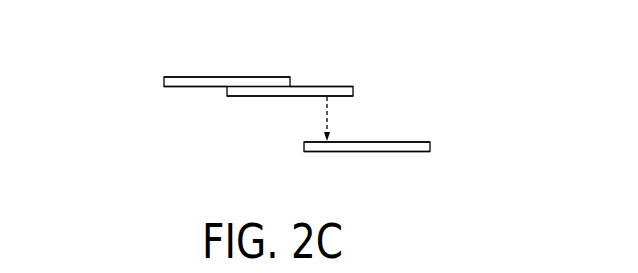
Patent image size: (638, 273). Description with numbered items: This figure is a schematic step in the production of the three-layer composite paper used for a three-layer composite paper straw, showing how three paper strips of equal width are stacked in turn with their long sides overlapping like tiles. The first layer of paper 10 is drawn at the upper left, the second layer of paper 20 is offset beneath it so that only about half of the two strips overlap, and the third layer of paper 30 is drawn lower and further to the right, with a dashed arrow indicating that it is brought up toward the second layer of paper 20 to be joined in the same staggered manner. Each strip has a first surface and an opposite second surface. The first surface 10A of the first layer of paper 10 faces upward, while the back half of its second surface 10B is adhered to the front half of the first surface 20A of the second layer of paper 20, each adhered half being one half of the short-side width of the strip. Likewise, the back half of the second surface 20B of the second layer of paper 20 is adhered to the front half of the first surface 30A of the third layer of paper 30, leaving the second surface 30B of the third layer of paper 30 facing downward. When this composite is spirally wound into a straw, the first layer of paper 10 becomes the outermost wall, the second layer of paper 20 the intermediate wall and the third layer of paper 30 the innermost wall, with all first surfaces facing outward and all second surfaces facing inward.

The first layer of paper 10 is at (170, 83).
The first surface of the first layer of paper 10A is at (194, 68).
The second surface of the first layer of paper 10B is at (184, 97).
The second layer of paper 20 is at (337, 92).
The first surface of the second layer of paper 20A is at (304, 79).
The second surface of the second layer of paper 20B is at (265, 104).
The third layer of paper 30 is at (423, 148).
The first surface of the third layer of paper 30A is at (408, 131).
The second surface of the third layer of paper 30B is at (408, 164).